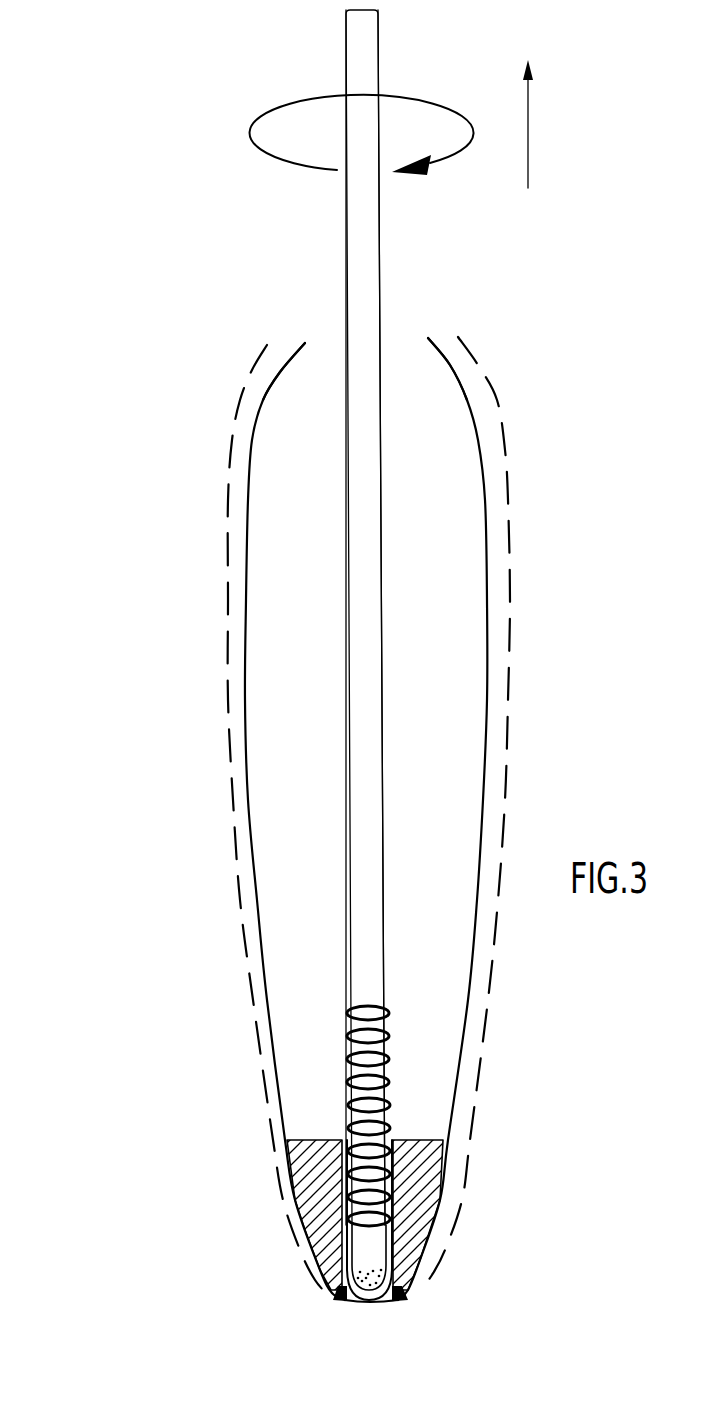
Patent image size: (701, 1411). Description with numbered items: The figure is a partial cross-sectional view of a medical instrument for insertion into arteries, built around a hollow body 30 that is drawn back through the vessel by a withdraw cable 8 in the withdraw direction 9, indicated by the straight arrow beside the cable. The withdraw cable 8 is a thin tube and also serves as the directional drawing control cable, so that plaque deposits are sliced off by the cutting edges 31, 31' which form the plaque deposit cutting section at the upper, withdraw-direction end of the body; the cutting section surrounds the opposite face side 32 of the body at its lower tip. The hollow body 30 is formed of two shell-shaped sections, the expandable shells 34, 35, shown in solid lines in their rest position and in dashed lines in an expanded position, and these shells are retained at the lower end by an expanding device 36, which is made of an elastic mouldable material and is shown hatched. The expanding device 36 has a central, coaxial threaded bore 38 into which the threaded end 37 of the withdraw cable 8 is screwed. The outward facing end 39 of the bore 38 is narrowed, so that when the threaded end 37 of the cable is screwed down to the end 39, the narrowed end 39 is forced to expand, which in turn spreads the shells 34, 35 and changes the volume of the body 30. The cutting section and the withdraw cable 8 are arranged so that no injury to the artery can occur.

The withdraw cable 8 is at (380, 240).
The withdraw direction 9 is at (534, 124).
The hollow body 30 is at (124, 555).
The cutting edge 31 is at (280, 314).
The cutting edge 31' is at (469, 335).
The face side 32 is at (436, 1322).
The expandable shell 34 is at (242, 627).
The expandable shell 35 is at (488, 685).
The expanding device 36 is at (432, 1193).
The threaded end 37 is at (390, 1070).
The threaded bore 38 is at (340, 1231).
The outward facing end 39 is at (364, 1307).